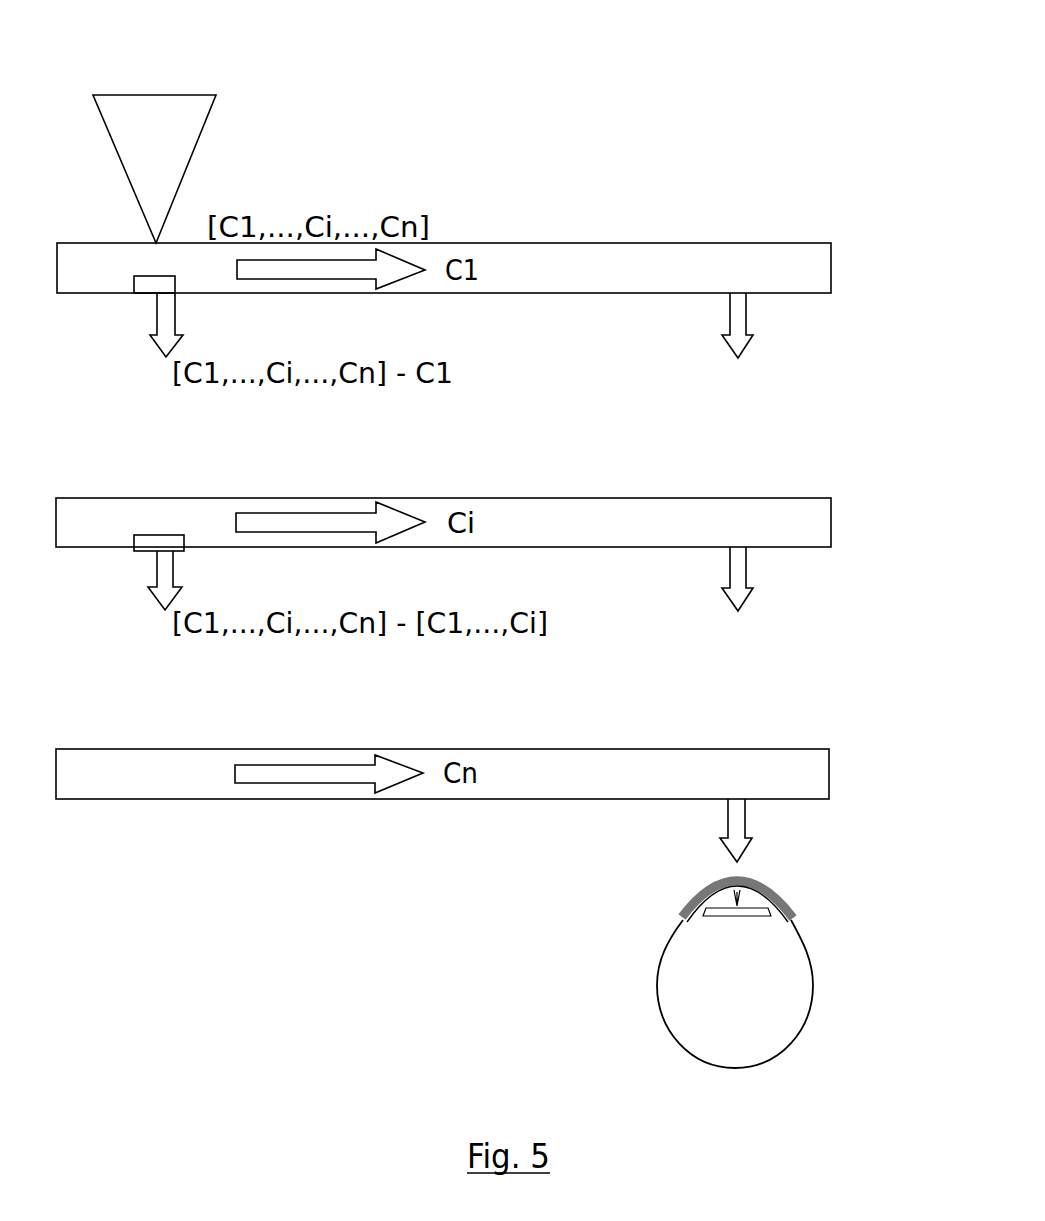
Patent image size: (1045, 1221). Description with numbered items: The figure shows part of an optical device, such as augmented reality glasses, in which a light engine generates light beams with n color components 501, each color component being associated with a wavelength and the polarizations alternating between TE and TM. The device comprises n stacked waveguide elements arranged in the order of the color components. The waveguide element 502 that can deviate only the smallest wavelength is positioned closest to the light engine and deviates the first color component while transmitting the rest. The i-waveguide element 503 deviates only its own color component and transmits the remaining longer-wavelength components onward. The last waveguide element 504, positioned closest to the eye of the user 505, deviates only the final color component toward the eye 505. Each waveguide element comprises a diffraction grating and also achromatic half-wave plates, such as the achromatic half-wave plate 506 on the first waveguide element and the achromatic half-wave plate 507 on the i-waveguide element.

The light beams with n color components 501 is at (178, 128).
The waveguide element deviating the smallest wavelength 502 is at (807, 267).
The i-waveguide element 503 is at (807, 521).
The n-th waveguide 504 is at (805, 772).
The eye of the user 505 is at (750, 992).
The achromatic half-wave plate 506 is at (157, 287).
The achromatic half-wave plate 507 is at (155, 543).